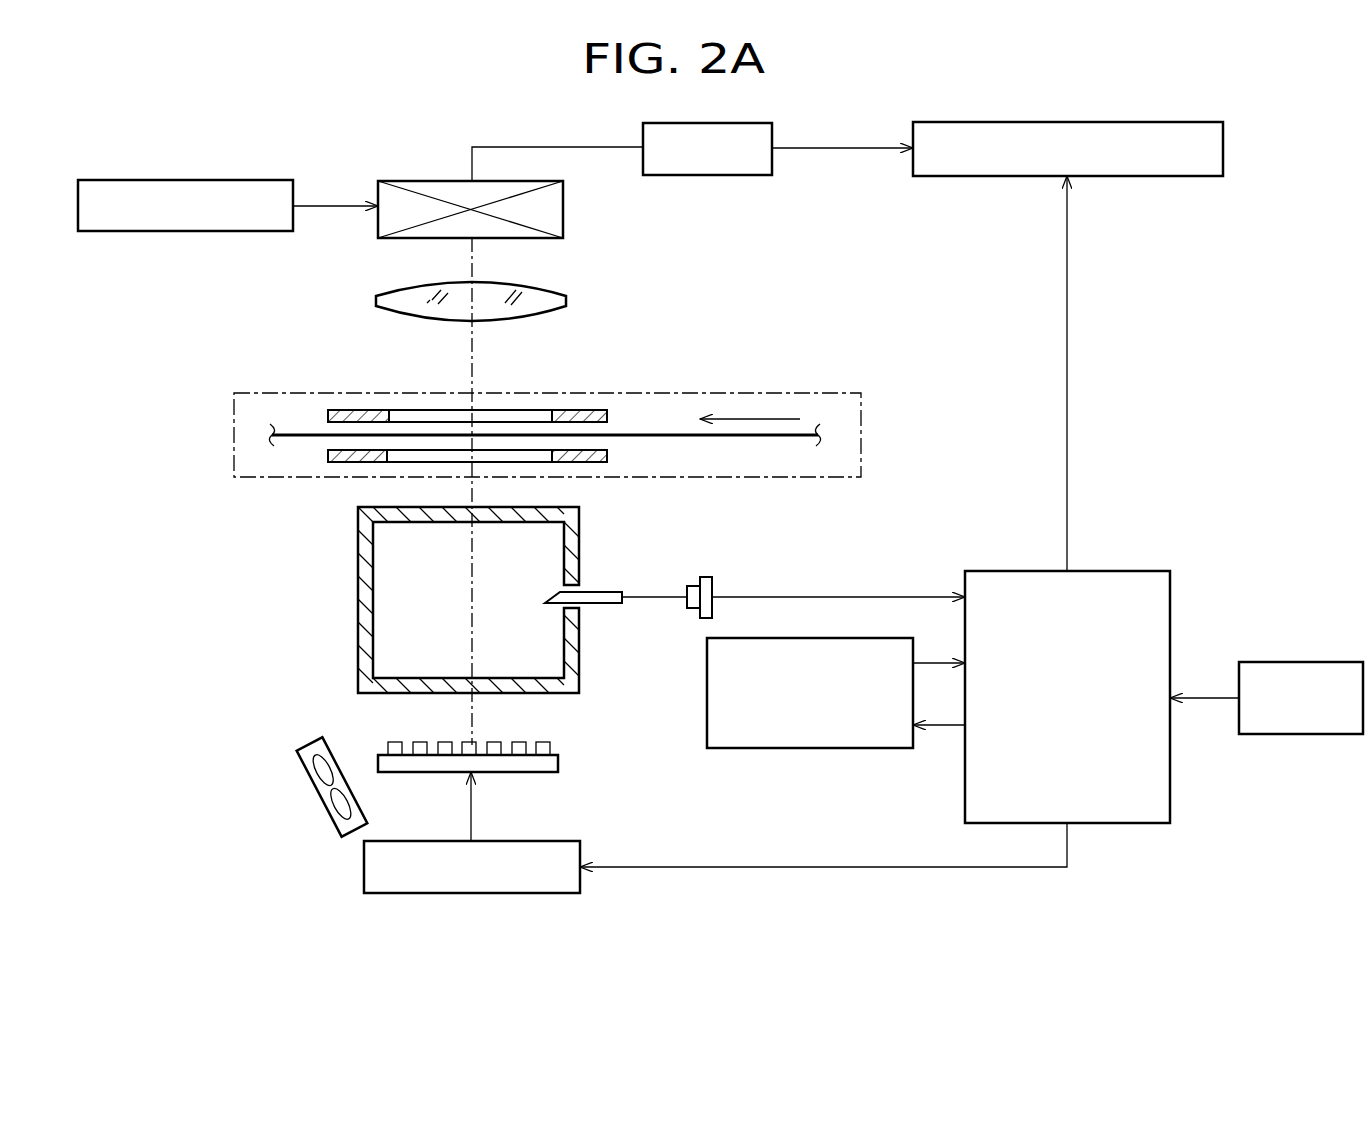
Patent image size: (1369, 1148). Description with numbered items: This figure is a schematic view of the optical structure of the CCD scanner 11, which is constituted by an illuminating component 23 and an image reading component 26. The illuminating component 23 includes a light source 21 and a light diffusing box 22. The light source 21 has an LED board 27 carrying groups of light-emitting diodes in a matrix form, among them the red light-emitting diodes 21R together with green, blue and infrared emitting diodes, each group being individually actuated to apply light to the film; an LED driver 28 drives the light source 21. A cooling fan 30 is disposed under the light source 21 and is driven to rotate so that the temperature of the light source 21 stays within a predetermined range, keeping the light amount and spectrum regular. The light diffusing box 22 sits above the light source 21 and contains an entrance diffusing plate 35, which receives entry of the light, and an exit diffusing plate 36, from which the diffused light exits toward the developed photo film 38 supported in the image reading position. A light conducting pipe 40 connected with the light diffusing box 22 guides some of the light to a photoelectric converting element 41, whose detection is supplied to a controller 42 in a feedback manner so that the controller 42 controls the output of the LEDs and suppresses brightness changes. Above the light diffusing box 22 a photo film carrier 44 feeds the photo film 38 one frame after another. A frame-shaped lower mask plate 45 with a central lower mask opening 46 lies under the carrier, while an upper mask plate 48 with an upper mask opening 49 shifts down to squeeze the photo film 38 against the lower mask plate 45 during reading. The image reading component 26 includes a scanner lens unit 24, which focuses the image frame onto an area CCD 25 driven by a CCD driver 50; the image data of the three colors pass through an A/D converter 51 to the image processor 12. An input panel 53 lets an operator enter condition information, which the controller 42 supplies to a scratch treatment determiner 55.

The CCD scanner 11 is at (118, 318).
The image processor 12 is at (1159, 176).
The light source 21 is at (516, 734).
The red light-emitting diodes 21R is at (552, 744).
The light diffusing box 22 is at (358, 633).
The illuminating component 23 is at (248, 618).
The scanner lens unit 24 is at (566, 301).
The area CCD 25 is at (563, 217).
The image reading component 26 is at (668, 220).
The LED board 27 is at (515, 772).
The LED driver 28 is at (471, 893).
The cooling fan 30 is at (310, 781).
The entrance diffusing plate 35 is at (505, 678).
The exit diffusing plate 36 is at (550, 505).
The photo film 38 is at (298, 433).
The light conducting pipe 40 is at (612, 590).
The photoelectric converting element 41 is at (712, 582).
The controller 42 is at (1125, 571).
The photo film carrier 44 is at (234, 435).
The lower mask plate 45 is at (340, 463).
The lower mask opening 46 is at (395, 463).
The upper mask plate 48 is at (355, 410).
The upper mask opening 49 is at (403, 412).
The CCD driver 50 is at (188, 180).
The A/D converter 51 is at (772, 163).
The input panel 53 is at (1316, 662).
The scratch treatment determiner 55 is at (817, 748).